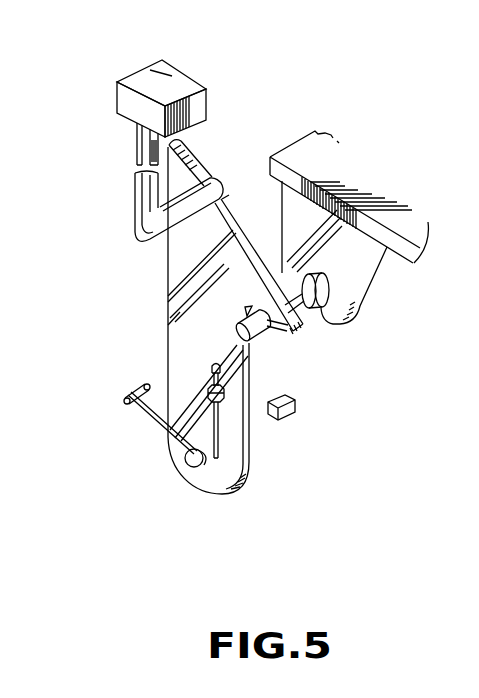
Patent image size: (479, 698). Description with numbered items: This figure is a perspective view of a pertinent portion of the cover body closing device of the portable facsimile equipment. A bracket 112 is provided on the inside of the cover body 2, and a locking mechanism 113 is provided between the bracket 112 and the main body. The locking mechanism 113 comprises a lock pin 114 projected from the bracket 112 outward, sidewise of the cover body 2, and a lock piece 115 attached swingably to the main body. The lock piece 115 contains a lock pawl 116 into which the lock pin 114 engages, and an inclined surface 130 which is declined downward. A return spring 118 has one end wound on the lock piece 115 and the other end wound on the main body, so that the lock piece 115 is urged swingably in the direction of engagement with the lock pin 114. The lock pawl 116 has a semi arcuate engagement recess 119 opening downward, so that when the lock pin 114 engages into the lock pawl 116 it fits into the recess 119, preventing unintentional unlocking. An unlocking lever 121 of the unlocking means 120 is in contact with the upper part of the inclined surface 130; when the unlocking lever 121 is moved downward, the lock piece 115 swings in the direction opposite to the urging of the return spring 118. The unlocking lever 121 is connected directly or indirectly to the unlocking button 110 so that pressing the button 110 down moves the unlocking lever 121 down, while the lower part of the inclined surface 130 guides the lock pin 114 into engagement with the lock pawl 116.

The cover body 2 is at (305, 148).
The unlocking button 110 is at (168, 82).
The bracket 112 is at (353, 283).
The locking mechanism 113 is at (287, 443).
The lock pin 114 is at (265, 333).
The lock piece 115 is at (168, 308).
The lock pawl 116 is at (292, 337).
The return spring 118 is at (153, 418).
The engagement recess 119 is at (268, 266).
The unlocking means 120 is at (103, 100).
The unlocking lever 121 is at (212, 188).
The inclined surface 130 is at (237, 197).